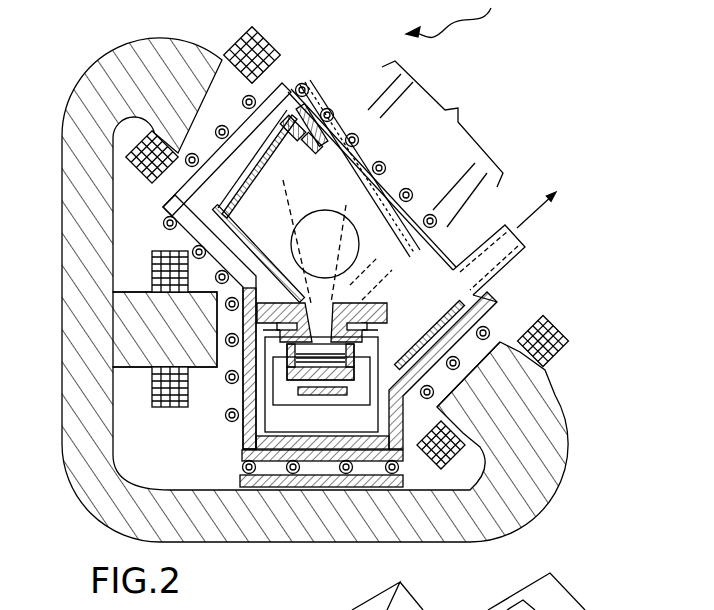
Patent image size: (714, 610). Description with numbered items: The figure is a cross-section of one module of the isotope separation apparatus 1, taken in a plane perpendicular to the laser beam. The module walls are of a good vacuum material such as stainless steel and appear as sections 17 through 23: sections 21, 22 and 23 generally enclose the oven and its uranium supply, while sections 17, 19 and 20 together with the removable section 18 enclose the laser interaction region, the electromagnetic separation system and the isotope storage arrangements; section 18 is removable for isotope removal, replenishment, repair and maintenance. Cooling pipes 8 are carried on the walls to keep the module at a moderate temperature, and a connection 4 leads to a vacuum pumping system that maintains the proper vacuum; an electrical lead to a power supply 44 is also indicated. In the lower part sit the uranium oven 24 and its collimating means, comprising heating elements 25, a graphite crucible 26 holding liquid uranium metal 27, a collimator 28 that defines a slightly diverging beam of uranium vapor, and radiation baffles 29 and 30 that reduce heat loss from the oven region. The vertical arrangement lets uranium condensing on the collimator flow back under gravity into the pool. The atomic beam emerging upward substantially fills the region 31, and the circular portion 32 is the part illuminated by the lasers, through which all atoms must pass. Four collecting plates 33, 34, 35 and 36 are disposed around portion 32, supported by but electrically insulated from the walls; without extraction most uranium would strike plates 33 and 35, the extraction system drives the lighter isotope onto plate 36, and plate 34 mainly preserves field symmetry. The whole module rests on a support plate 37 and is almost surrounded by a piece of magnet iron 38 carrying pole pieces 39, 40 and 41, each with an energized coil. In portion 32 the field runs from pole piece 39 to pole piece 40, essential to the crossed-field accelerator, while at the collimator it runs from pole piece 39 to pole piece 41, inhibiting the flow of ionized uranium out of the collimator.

The electron beam evaporation apparatus 1 is at (453, 19).
The connection to a vacuum pumping system 4 is at (524, 247).
The cooling pipes 8 is at (257, 97).
The wall section 17 is at (462, 347).
The removable wall section 18 is at (308, 104).
The wall section 19 is at (168, 185).
The wall section 20 is at (187, 237).
The wall section 21 is at (243, 450).
The wall section 22 is at (322, 462).
The wall section 23 is at (404, 445).
The uranium oven 24 is at (240, 395).
The heating elements 25 is at (348, 396).
The crucible 26 is at (275, 372).
The liquid uranium metal 27 is at (387, 330).
The collimator 28 is at (383, 300).
The radiation baffle 29 is at (330, 400).
The radiation baffle 30 is at (262, 415).
The region 31 is at (236, 290).
The illuminated portion 32 is at (352, 222).
The collecting plate 33 is at (258, 207).
The collecting plate 34 is at (438, 325).
The collecting plate 35 is at (330, 173).
The collecting plate 36 is at (190, 282).
The support plate 37 is at (252, 487).
The magnet iron 38 is at (62, 220).
The pole piece 39 is at (502, 410).
The pole piece 40 is at (200, 117).
The pole piece 41 is at (194, 345).
The power supply 44 is at (469, 144).